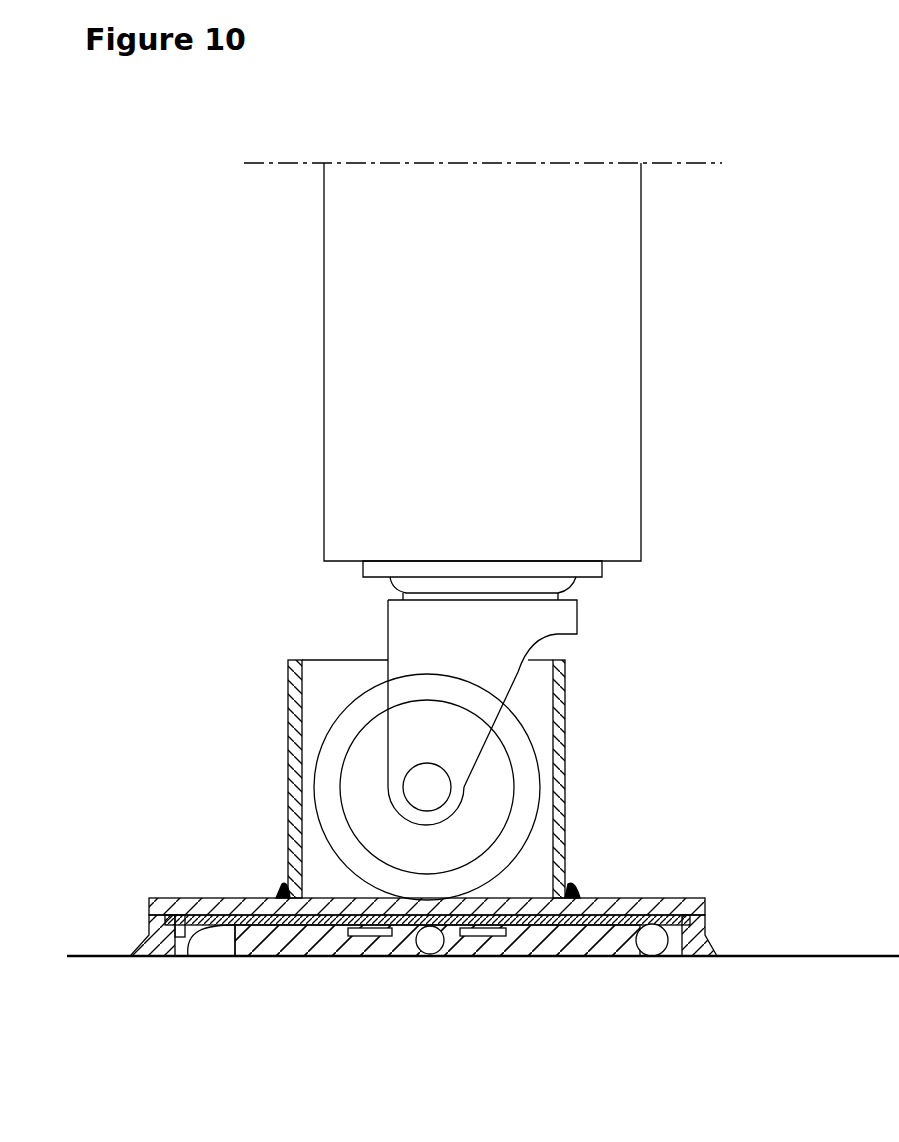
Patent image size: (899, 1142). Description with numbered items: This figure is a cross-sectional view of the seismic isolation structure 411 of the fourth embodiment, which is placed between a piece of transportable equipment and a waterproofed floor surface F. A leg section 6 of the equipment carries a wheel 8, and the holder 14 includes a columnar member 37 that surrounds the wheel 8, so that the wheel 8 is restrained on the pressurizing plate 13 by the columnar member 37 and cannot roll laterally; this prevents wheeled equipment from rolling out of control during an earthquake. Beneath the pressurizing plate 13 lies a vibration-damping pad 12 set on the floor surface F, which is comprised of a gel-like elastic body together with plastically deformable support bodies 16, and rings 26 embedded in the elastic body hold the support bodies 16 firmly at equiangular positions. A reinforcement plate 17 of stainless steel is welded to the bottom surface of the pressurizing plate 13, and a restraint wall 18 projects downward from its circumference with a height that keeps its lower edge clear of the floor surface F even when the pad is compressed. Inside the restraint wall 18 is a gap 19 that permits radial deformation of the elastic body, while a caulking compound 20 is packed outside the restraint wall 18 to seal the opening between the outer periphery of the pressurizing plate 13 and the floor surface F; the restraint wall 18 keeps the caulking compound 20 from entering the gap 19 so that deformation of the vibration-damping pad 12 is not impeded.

The leg section 6 is at (324, 378).
The seismic isolation structure 411 is at (225, 616).
The wheel 8 is at (330, 783).
The columnar member 37 is at (288, 683).
The holder 14 is at (582, 731).
The pressurizing plate 13 is at (640, 898).
The caulking compound 20 is at (150, 930).
The restraint wall 18 is at (165, 958).
The gap 19 is at (213, 958).
The vibration-damping pad 12 is at (312, 960).
The support body 16 is at (420, 958).
The ring 26 is at (500, 958).
The reinforcement plate 17 is at (635, 958).
The floor surface F is at (763, 955).